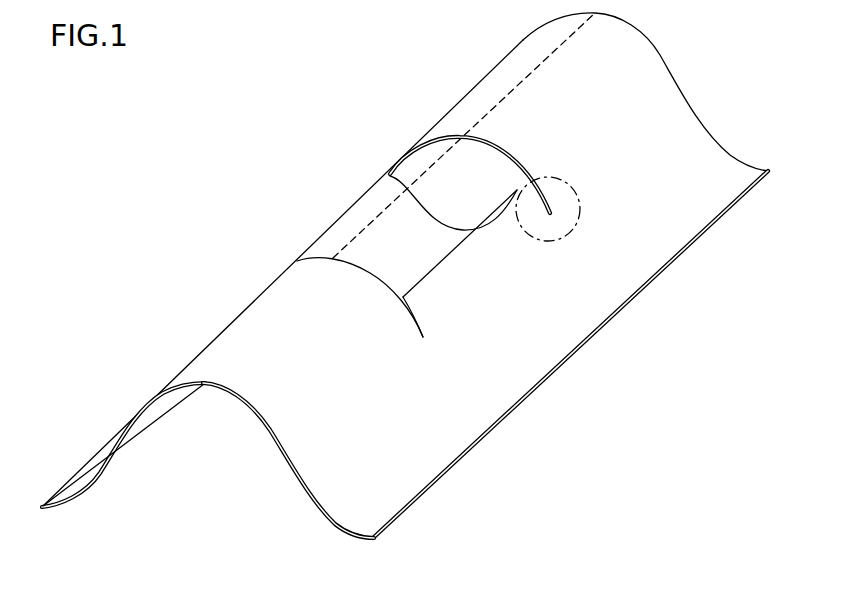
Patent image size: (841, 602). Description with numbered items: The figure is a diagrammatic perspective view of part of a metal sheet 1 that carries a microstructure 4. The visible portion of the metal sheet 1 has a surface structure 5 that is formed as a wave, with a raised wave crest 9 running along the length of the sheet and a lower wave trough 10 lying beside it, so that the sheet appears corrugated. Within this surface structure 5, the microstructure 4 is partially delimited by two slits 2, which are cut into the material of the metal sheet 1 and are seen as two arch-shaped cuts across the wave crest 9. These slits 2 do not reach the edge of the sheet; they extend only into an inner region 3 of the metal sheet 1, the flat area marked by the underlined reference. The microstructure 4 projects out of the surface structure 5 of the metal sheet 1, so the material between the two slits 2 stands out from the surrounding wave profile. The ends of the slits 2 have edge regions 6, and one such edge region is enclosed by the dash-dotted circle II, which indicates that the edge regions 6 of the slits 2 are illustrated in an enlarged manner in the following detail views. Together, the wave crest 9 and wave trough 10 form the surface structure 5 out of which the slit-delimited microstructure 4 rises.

The metal sheet 1 is at (514, 402).
The slits 2 is at (391, 180).
The inner region 3 is at (368, 453).
The microstructure 4 is at (421, 252).
The surface structure 5 is at (290, 471).
The edge regions 6 is at (422, 326).
The wave crests 9 is at (257, 330).
The wave troughs 10 is at (71, 488).
The detail region of the edge regions II is at (576, 190).